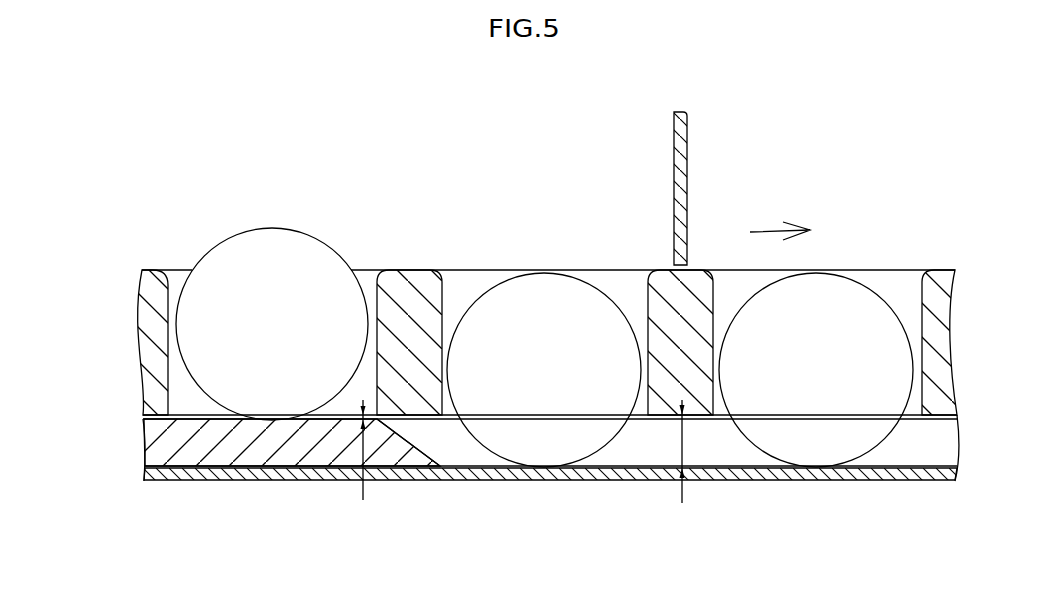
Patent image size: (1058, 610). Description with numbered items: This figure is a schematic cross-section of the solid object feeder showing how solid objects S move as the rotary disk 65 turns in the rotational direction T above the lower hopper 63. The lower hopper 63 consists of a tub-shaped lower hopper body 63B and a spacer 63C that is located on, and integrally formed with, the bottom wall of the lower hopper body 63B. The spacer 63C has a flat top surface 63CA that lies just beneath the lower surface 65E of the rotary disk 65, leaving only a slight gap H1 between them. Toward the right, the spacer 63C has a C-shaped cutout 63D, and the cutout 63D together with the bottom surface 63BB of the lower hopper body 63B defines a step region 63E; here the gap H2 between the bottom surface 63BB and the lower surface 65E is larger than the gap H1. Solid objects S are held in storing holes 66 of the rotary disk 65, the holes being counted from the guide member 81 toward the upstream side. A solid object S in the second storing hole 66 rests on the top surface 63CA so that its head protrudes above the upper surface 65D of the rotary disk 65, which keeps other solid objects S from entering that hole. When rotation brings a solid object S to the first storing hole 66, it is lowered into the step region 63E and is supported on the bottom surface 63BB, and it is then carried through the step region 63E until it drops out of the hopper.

The storing hole 66 is at (175, 283).
The guide member 81 is at (688, 138).
The upper surface of the rotary disk 65D is at (691, 267).
The solid object S is at (310, 275).
The rotational direction T is at (780, 220).
The rotary disk 65 is at (150, 324).
The lower surface of the rotary disk 65E is at (156, 420).
The lower hopper 63 is at (86, 500).
The spacer 63C is at (158, 445).
The lower hopper body 63B is at (146, 473).
The top surface of the spacer 63CA is at (343, 418).
The step region 63E is at (647, 447).
The bottom surface of the lower hopper body 63BB is at (697, 466).
The cutout 63D is at (915, 443).
The gap H1 is at (355, 451).
The gap H2 is at (674, 451).